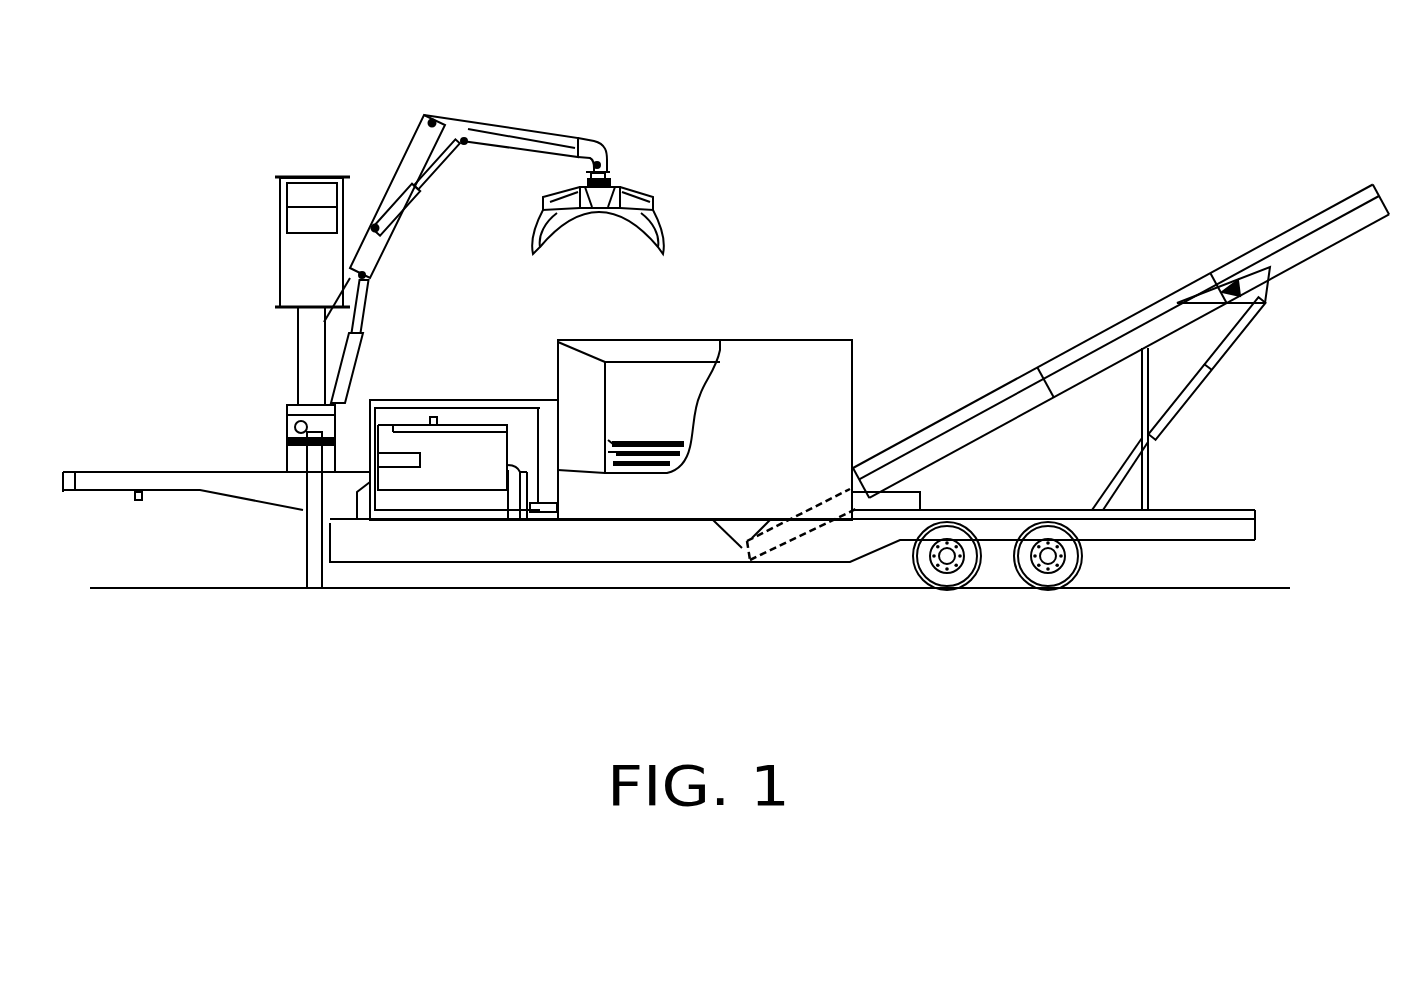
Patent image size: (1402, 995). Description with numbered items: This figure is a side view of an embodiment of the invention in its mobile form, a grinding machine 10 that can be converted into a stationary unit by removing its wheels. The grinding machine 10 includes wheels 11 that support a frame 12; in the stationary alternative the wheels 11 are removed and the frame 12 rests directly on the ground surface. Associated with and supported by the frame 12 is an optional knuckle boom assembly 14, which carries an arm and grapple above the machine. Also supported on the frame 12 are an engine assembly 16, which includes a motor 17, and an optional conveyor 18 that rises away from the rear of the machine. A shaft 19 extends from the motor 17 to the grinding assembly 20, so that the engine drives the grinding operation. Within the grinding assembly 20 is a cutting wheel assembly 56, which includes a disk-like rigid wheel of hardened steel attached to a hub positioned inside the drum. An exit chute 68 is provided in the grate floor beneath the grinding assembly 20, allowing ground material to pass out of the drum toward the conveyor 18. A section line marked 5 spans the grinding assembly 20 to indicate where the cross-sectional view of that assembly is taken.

The grinding machine 10 is at (940, 207).
The wheels 11 is at (997, 593).
The frame 12 is at (1253, 510).
The knuckle boom assembly 14 is at (303, 175).
The engine assembly 16 is at (464, 415).
The motor 17 is at (420, 532).
The conveyor 18 is at (1273, 235).
The shaft 19 is at (501, 577).
The grinding assembly 20 is at (858, 355).
The cutting wheel assembly 56 is at (645, 418).
The exit chute 68 is at (688, 582).
The section line 5- 5 is at (708, 285).